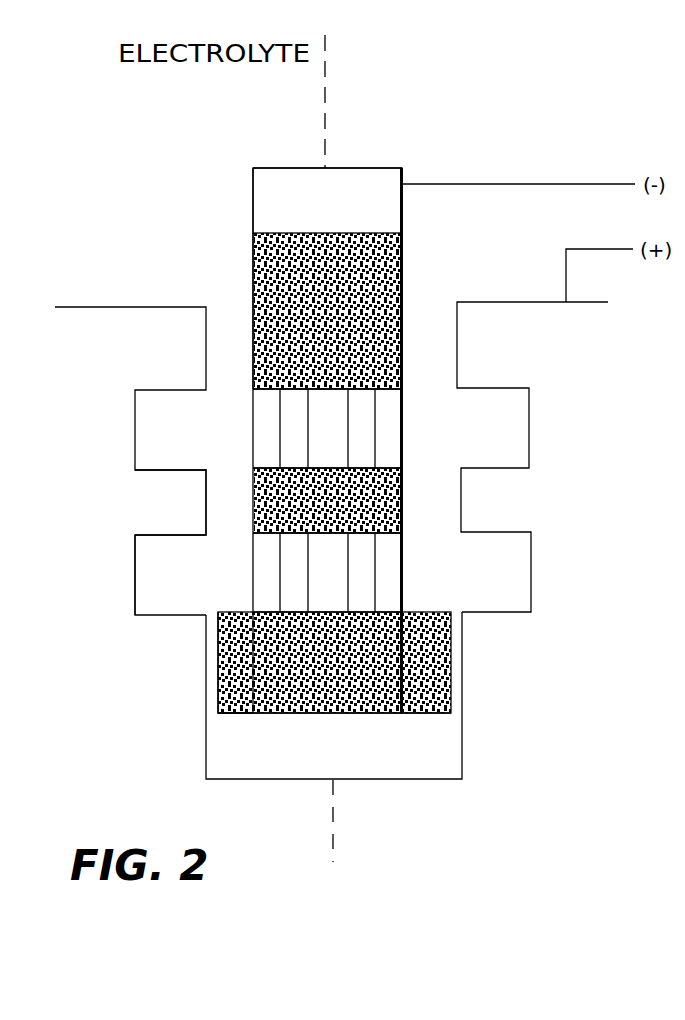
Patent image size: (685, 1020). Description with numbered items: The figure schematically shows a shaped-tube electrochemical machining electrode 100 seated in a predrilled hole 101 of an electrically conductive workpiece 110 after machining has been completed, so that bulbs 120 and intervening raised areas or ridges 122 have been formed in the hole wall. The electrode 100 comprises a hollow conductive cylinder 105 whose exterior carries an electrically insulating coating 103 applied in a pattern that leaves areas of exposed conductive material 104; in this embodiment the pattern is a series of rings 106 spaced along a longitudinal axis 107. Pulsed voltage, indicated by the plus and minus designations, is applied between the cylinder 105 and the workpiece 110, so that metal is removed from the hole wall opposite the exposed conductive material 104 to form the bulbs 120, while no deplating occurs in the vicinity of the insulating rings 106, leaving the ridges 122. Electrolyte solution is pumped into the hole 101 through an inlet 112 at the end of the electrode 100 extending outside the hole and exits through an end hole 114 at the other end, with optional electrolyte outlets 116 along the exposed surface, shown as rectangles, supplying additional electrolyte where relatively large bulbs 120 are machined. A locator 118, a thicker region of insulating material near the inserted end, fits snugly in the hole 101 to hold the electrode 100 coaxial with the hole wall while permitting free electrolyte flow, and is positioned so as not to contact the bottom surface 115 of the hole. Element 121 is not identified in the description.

The shaped-tube electrochemical machining electrode 100 is at (445, 83).
The predrilled hole 101 is at (228, 288).
The insulating coating 103 is at (253, 258).
The exposed conductive material 104 is at (265, 423).
The cylinder 105 is at (402, 228).
The rings of insulating coating 106 is at (404, 498).
The longitudinal axis 107 is at (333, 820).
The workpiece 110 is at (118, 541).
The inlet 112 is at (347, 168).
The end hole 114 is at (367, 713).
The bottom surface 115 is at (438, 778).
The electrolyte outlets 116 is at (378, 432).
The locator 118 is at (217, 710).
The bulbs 120 is at (137, 583).
The right electrode 121 is at (460, 346).
The ridges 122 is at (212, 512).